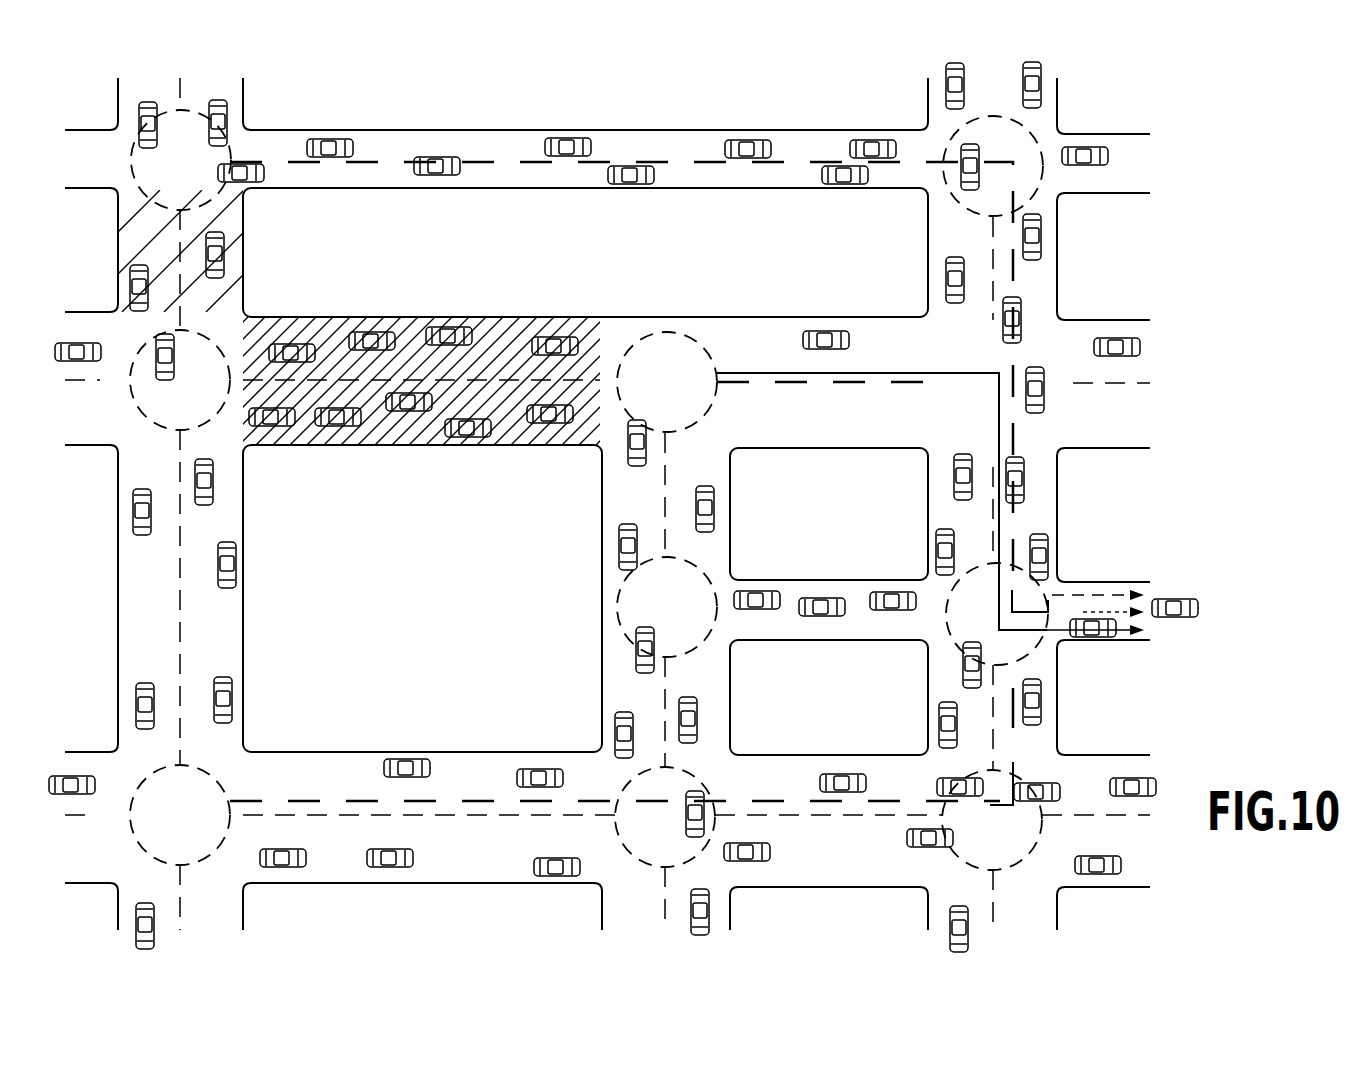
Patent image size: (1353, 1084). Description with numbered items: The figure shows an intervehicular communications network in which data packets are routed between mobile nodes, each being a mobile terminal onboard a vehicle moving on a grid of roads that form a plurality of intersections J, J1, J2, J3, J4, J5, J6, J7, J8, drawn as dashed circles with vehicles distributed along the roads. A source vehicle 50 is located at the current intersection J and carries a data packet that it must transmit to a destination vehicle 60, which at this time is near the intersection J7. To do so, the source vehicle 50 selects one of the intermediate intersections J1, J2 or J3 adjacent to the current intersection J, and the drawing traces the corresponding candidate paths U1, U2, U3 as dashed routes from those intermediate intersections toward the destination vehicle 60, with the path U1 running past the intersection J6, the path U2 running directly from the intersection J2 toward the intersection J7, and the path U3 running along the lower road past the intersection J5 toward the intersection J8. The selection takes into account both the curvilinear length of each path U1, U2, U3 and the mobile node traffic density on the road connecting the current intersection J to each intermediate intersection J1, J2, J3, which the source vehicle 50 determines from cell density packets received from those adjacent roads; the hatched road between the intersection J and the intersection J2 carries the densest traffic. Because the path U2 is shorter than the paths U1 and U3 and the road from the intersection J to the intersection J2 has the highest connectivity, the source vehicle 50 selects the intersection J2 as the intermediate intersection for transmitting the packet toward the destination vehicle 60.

The intermediate intersection J1 is at (133, 173).
The intermediate intersection J2 is at (700, 335).
The intermediate intersection J3 is at (137, 838).
The intersection J4 is at (715, 582).
The intersection J5 is at (655, 868).
The intersection J6 is at (1035, 140).
The intersection J7 is at (1042, 582).
The intersection J8 is at (968, 868).
The current intersection J is at (132, 405).
The path U1 is at (400, 160).
The path U2 is at (765, 380).
The path U3 is at (313, 800).
The source vehicle 50 is at (170, 380).
The destination vehicle 60 is at (1175, 599).